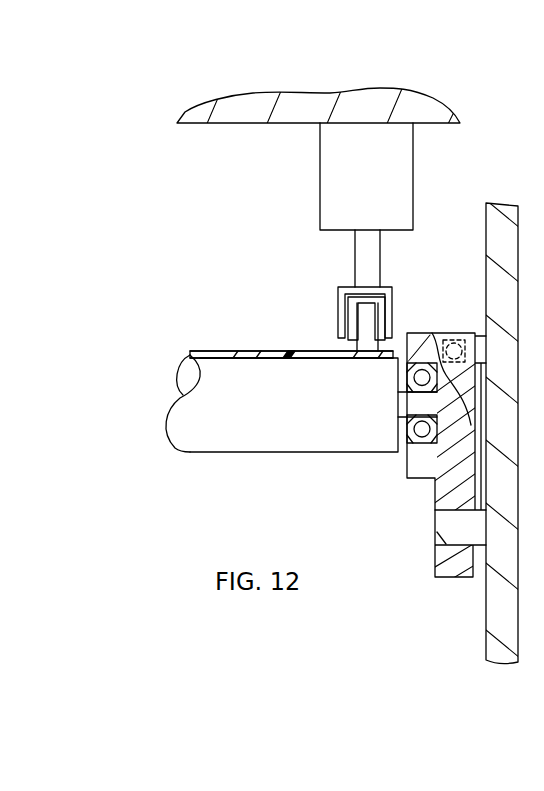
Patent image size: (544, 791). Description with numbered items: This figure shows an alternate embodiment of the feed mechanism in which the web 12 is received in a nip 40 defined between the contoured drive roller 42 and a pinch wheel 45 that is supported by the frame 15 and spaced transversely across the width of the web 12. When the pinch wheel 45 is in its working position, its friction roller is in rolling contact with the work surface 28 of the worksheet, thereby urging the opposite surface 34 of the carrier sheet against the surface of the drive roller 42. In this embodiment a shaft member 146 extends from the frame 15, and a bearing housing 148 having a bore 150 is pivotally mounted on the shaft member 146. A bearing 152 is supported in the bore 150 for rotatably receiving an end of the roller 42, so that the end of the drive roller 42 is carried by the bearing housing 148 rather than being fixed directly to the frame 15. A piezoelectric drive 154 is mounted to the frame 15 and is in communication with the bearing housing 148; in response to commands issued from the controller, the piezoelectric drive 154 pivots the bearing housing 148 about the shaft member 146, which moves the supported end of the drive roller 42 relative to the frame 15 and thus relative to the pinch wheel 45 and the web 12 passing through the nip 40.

The web 12 is at (195, 340).
The frame 15 is at (486, 230).
The work surface 28 is at (259, 350).
The opposite surface 34 is at (258, 358).
The nip 40 is at (335, 343).
The contoured drive roller 42 is at (240, 428).
The pinch wheel 45 is at (302, 238).
The shaft member 146 is at (458, 515).
The bearing housing 148 is at (430, 463).
The bore 150 is at (407, 435).
The bearing 152 is at (398, 390).
The piezoelectric drive 154 is at (448, 338).